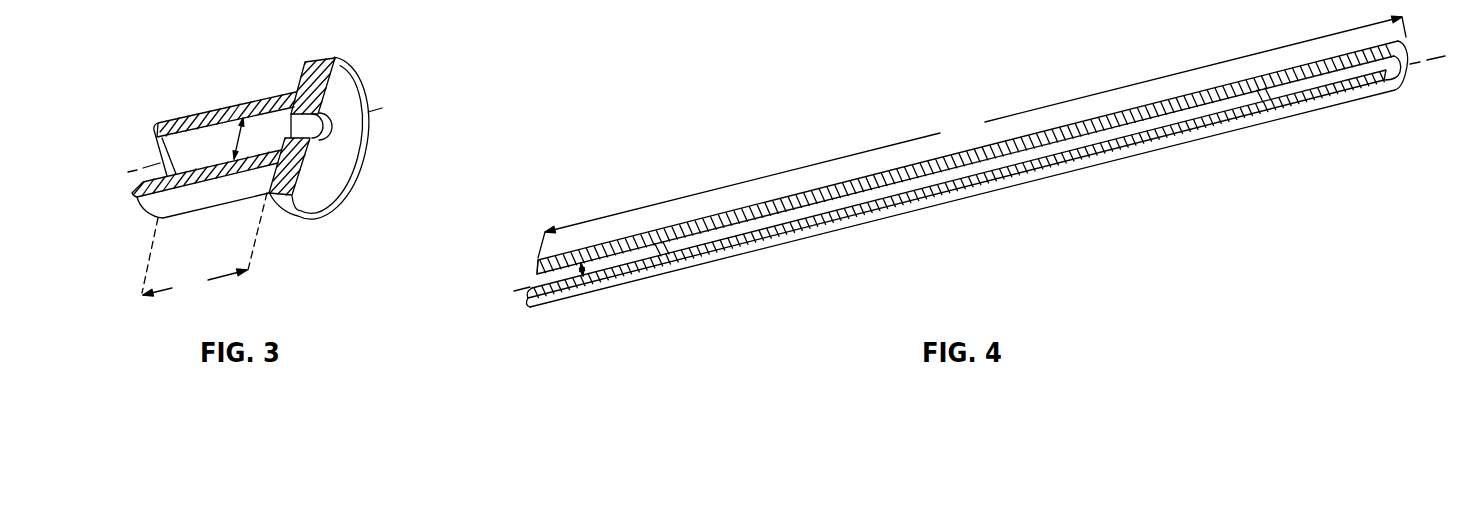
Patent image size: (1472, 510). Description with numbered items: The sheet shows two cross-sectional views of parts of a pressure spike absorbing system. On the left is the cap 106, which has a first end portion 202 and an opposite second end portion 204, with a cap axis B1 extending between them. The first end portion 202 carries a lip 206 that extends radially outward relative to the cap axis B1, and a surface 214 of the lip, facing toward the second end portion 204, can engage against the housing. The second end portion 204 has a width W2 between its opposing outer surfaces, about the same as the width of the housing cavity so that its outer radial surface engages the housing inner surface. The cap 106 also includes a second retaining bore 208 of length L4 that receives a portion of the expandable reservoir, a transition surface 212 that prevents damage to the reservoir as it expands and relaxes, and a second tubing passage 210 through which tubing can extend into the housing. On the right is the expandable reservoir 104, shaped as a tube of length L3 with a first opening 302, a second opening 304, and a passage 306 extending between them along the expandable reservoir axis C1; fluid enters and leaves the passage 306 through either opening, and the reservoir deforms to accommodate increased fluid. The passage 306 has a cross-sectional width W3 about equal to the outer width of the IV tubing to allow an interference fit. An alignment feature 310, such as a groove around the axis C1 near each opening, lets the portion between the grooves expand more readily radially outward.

In FIG. 3, the cap 106 is at (418, 40).
In FIG. 3, the first end portion 202 is at (380, 95).
In FIG. 3, the second end portion 204 is at (157, 153).
In FIG. 3, the lip 206 is at (330, 61).
In FIG. 3, the second retaining bore 208 is at (251, 118).
In FIG. 3, the second tubing passage 210 is at (303, 117).
In FIG. 3, the transition surface 212 is at (156, 142).
In FIG. 3, the surface of the lip 214 is at (262, 197).
In FIG. 3, the width of the second end portion W2 is at (236, 134).
In FIG. 3, the length of the second retaining bore L4 is at (204, 247).
In FIG. 3, the cap axis B1 is at (388, 107).
In FIG. 4, the expandable reservoir 104 is at (1030, 220).
In FIG. 4, the first opening 302 is at (530, 275).
In FIG. 4, the second opening 304 is at (1410, 72).
In FIG. 4, the passage 306 is at (1172, 126).
In FIG. 4, the alignment feature 310 is at (666, 258).
In FIG. 4, the length of the expandable reservoir L3 is at (972, 137).
In FIG. 4, the cross-sectional width of the passage W3 is at (590, 263).
In FIG. 4, the expandable reservoir axis C1 is at (507, 292).